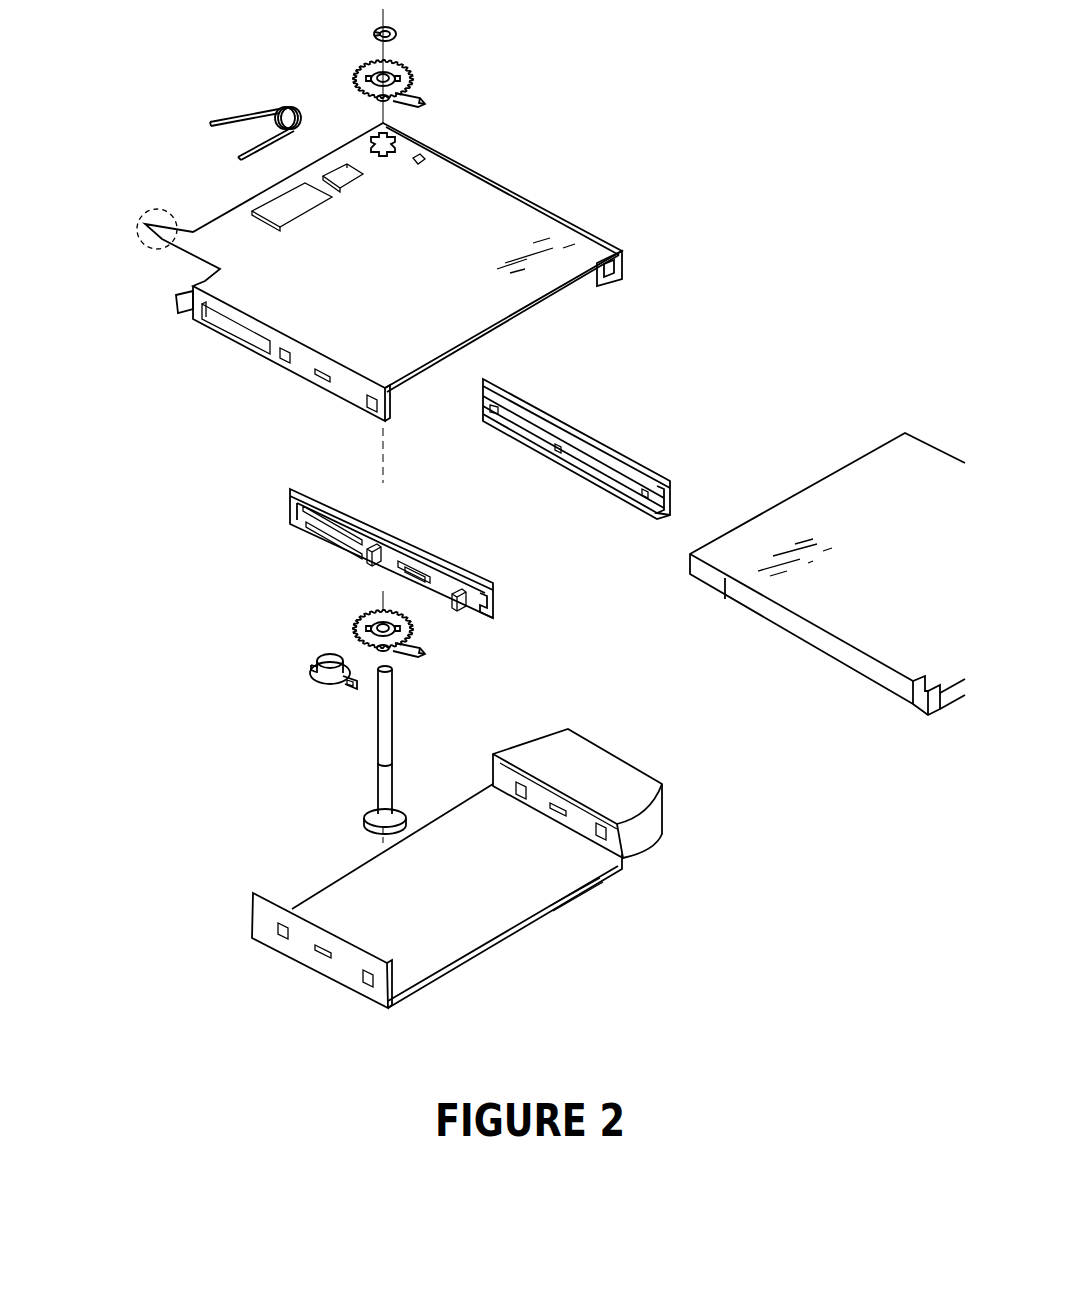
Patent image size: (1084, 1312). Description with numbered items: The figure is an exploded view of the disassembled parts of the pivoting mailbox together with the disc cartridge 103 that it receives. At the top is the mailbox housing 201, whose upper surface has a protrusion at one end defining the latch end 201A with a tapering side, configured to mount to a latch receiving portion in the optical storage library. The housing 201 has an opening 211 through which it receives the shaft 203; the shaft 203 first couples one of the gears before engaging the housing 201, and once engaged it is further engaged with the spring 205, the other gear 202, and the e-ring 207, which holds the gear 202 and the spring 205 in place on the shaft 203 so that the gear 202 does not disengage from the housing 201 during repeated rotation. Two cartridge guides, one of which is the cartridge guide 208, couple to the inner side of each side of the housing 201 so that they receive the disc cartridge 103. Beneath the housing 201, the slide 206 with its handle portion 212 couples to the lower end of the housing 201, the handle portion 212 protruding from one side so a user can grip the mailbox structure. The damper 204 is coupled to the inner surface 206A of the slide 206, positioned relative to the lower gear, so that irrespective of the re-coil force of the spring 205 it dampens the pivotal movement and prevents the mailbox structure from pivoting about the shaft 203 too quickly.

The disc cartridge 103 is at (912, 432).
The mailbox housing 201 is at (183, 255).
The latch end 201A is at (173, 221).
The gear 202 is at (352, 80).
The shaft 203 is at (374, 736).
The damper 204 is at (308, 672).
The spring 205 is at (301, 114).
The slide 206 is at (250, 915).
The inner surface 206A is at (422, 960).
The e-ring 207 is at (368, 31).
The cartridge guide 208 is at (303, 531).
The opening 211 is at (396, 138).
The handle portion 212 is at (655, 782).